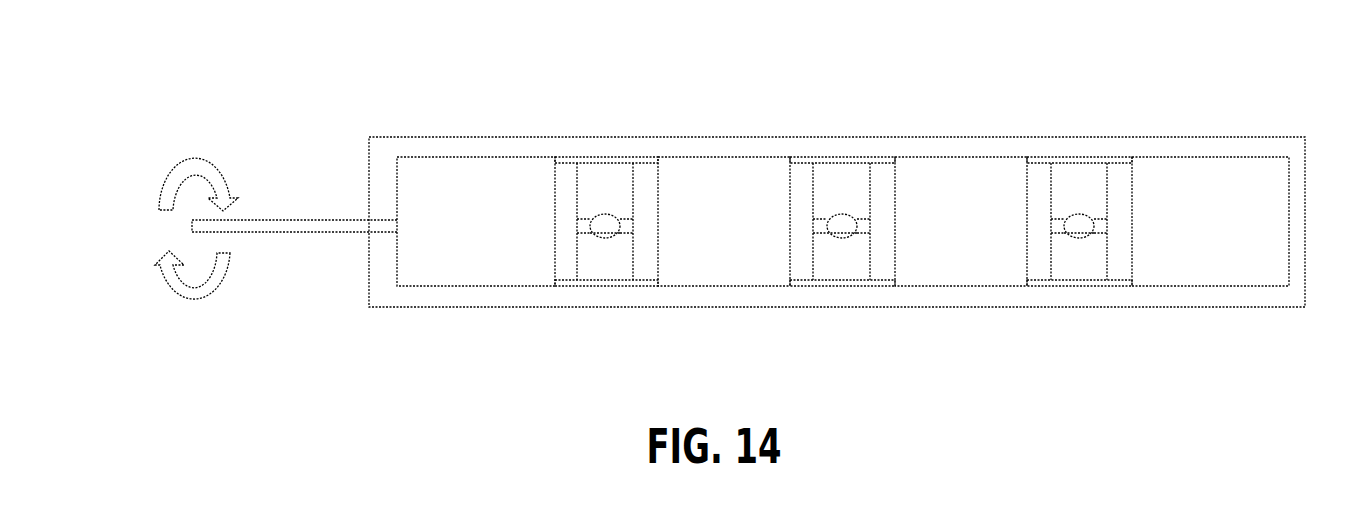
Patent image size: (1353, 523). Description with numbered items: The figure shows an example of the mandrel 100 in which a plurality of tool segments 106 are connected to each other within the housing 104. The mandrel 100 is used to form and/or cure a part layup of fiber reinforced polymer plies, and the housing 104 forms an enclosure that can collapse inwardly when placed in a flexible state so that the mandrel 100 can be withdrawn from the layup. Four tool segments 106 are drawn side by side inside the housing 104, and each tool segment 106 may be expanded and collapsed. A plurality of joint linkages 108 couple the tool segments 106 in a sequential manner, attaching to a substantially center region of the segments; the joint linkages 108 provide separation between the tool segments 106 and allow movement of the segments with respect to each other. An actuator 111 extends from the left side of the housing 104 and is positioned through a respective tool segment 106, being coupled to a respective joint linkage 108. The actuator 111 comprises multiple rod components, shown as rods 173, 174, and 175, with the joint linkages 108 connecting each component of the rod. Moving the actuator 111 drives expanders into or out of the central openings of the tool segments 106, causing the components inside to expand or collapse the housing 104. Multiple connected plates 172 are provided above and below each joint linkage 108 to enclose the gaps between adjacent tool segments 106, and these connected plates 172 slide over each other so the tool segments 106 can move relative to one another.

The mandrel 100 is at (328, 105).
The housing 104 is at (500, 307).
The tool segment 106 is at (480, 157).
The joint linkage 108 is at (605, 214).
The actuator 111 is at (312, 232).
The connected plates 172 is at (617, 286).
The rod 173 is at (588, 235).
The rod 174 is at (825, 235).
The rod 175 is at (1064, 235).